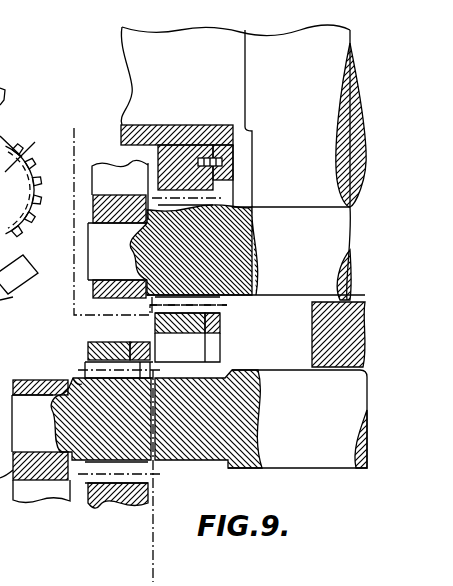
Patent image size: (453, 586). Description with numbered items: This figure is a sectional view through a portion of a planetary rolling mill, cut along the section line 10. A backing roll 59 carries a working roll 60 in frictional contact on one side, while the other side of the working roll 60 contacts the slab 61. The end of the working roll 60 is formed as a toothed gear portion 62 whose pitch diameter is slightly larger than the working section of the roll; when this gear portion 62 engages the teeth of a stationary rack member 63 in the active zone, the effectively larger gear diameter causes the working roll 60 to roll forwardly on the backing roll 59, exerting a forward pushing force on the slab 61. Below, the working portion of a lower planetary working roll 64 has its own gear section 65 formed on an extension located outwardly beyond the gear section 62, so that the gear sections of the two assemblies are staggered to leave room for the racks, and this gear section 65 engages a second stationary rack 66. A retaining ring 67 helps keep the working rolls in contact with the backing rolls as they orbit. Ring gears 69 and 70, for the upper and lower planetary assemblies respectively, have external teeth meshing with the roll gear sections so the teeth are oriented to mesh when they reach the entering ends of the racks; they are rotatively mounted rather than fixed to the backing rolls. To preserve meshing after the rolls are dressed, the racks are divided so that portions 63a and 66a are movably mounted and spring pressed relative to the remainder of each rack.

The section line 10- 10 is at (60, 133).
The backing roll 59 is at (243, 116).
The working roll 60 is at (292, 253).
The slab 61 is at (312, 320).
The toothed gear portion 62 is at (179, 208).
The stationary rack member 63 is at (28, 263).
The movable rack portion 63a is at (222, 323).
The working roll of the lower planetary assembly 64 is at (297, 419).
The gear section 65 is at (105, 380).
The stationary rack 66 is at (88, 350).
The movable rack portion 66a is at (152, 380).
The retaining ring 67 is at (118, 229).
The ring gear 69 is at (187, 175).
The ring gear 70 is at (117, 513).